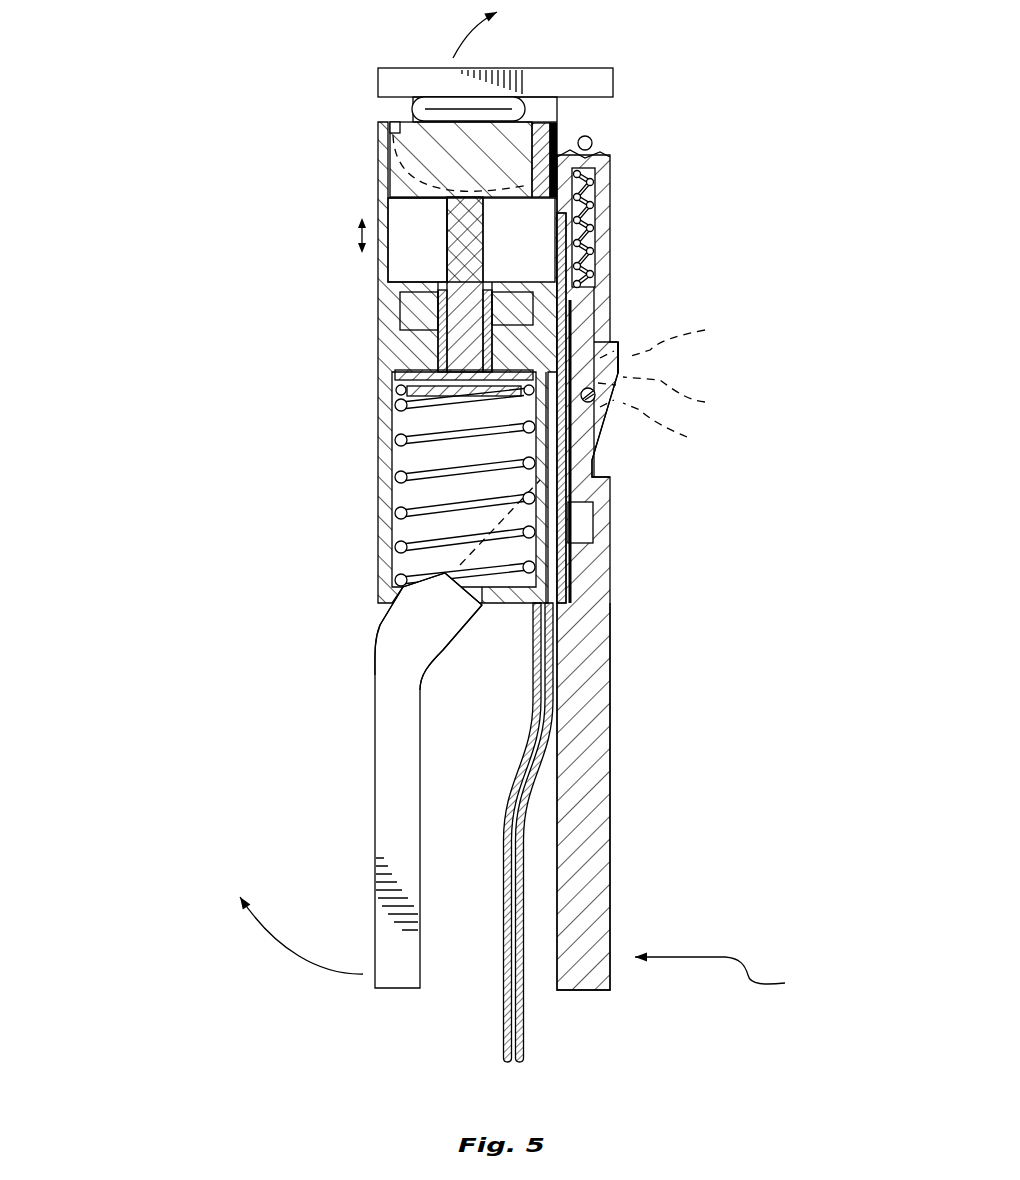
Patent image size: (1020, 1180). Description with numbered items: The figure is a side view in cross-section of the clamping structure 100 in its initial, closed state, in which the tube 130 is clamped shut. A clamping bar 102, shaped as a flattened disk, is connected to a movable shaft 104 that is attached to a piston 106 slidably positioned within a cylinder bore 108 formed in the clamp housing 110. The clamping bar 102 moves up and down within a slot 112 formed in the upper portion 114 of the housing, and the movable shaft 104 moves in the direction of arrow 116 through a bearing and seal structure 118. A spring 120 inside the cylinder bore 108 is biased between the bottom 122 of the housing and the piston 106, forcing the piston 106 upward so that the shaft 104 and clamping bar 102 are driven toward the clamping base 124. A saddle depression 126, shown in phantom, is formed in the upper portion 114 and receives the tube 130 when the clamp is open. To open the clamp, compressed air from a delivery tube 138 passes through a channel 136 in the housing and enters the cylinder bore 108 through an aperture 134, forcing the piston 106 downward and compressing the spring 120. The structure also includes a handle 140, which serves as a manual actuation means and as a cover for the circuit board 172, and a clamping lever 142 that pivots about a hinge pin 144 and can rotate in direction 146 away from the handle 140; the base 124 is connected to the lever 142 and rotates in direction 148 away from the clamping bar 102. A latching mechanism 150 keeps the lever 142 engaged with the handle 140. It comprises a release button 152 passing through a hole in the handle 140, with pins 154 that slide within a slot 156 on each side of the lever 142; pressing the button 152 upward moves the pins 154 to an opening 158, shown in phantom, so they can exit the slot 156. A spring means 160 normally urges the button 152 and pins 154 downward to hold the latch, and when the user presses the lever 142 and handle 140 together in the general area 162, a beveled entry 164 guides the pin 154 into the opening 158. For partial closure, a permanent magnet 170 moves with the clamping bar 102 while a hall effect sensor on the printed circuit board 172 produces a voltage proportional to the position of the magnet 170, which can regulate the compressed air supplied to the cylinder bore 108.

The clamping structure 100 is at (447, 531).
The clamping bar 102 is at (408, 159).
The movable shaft 104 is at (466, 254).
The piston 106 is at (430, 385).
The cylinder bore 108 is at (418, 459).
The clamp housing 110 is at (420, 501).
The slot 112 is at (412, 235).
The upper portion 114 is at (352, 150).
The arrow 116 is at (339, 235).
The bearing and seal structure 118 is at (443, 332).
The spring 120 is at (440, 567).
The bottom 122 is at (380, 623).
The clamping base 124 is at (532, 82).
The saddle depression 126 is at (400, 117).
The tube 130 is at (435, 100).
The aperture 134 is at (572, 335).
The channel 136 is at (543, 593).
The delivery tube 138 is at (505, 1002).
The handle 140 is at (583, 815).
The clamping lever 142 is at (393, 805).
The hinge pin 144 is at (592, 144).
The direction 146 is at (297, 935).
The direction 148 is at (481, 35).
The latching mechanism 150 is at (638, 338).
The release button 152 is at (618, 368).
The pins 154 is at (594, 400).
The slot 156 is at (684, 395).
The opening 158 is at (686, 338).
The spring means 160 is at (597, 202).
The general area 162 is at (738, 972).
The beveled entry 164 is at (677, 425).
The permanent magnet 170 is at (555, 130).
The printed circuit board 172 is at (597, 254).